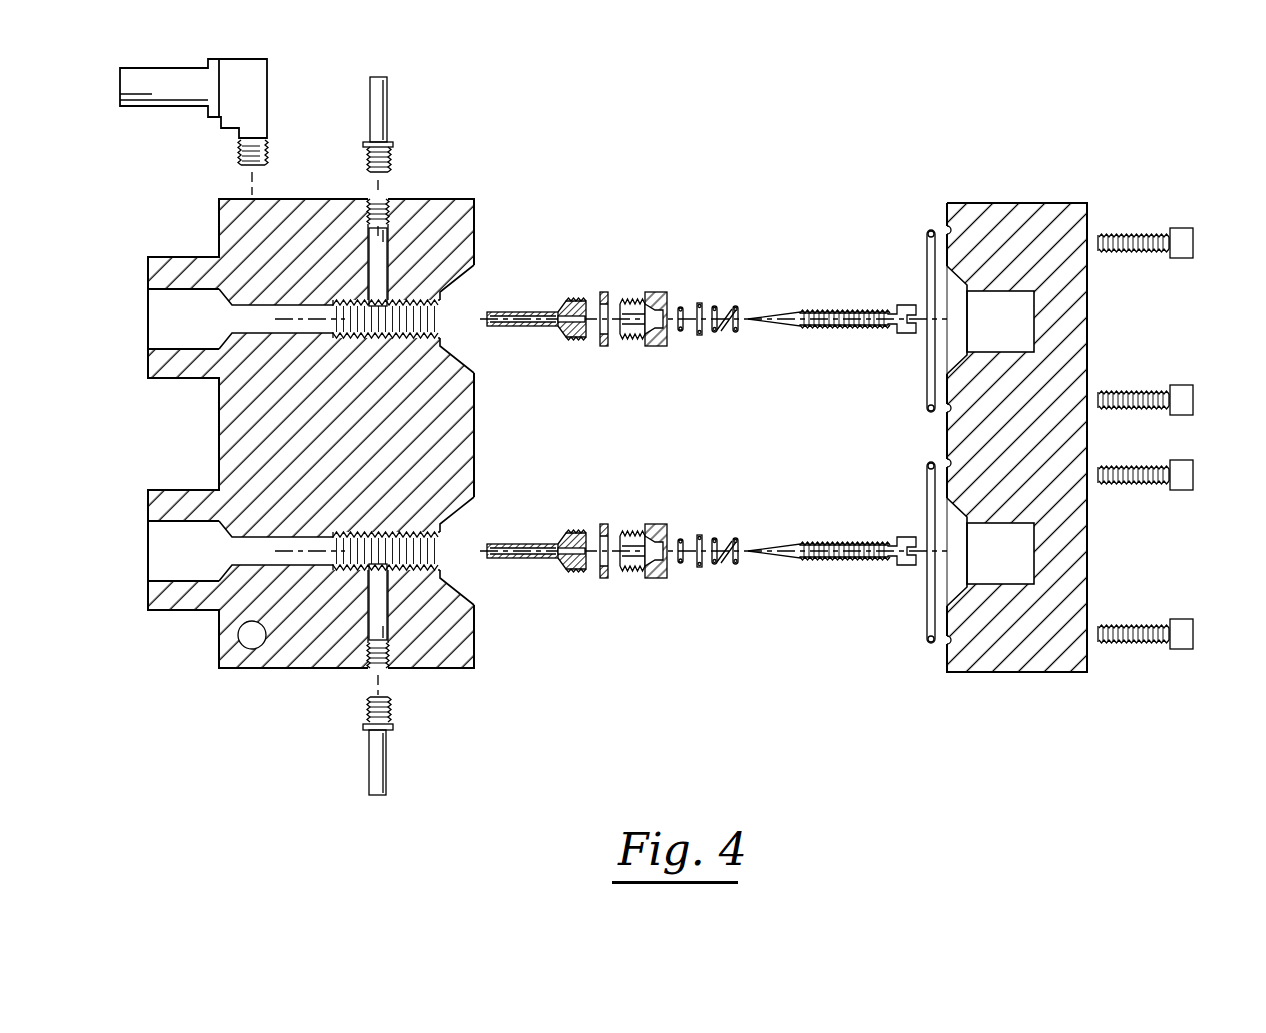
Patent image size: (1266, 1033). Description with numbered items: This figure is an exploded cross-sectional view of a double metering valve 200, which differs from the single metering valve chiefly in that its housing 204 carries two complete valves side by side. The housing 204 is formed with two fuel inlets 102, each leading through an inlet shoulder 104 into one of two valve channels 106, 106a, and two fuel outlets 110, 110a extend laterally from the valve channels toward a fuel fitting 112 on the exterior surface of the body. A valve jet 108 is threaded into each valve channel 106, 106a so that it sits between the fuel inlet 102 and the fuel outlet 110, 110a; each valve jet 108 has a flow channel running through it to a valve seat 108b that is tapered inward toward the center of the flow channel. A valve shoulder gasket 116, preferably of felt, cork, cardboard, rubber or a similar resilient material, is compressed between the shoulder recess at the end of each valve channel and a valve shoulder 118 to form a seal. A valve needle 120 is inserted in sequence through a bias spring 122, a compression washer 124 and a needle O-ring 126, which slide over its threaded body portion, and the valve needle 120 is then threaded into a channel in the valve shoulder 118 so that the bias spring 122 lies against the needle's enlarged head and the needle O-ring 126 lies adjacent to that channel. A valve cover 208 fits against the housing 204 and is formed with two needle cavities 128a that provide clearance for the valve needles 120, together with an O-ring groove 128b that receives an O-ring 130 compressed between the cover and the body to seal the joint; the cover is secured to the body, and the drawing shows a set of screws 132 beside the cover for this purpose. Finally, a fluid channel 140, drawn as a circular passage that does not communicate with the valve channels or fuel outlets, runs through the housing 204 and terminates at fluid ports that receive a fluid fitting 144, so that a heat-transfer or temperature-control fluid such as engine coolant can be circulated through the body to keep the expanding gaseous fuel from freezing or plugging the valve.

The double metering valve 200 is at (910, 83).
The housing 204 is at (218, 450).
The valve cover 208 is at (1045, 212).
The fuel inlet 102 is at (181, 289).
The inlet shoulder 104 is at (229, 336).
The valve channel 106 is at (312, 310).
The valve channel 106a is at (310, 540).
The valve jet 108 is at (515, 327).
The valve seat 108b is at (585, 323).
The fuel outlet 110 is at (378, 261).
The fuel outlet 110a is at (378, 621).
The fuel fitting 112 is at (390, 115).
The valve shoulder gasket 116 is at (605, 293).
The valve shoulder 118 is at (652, 348).
The valve needle 120 is at (838, 330).
The bias spring 122 is at (727, 310).
The compression washer 124 is at (700, 337).
The needle O-ring 126 is at (680, 308).
The needle cavity 128a is at (1015, 330).
The O-ring groove 128b is at (947, 408).
The O-ring 130 is at (930, 417).
The fastening screws 132 is at (1188, 383).
The fluid channel 140 is at (248, 650).
The fluid fitting 144 is at (258, 73).